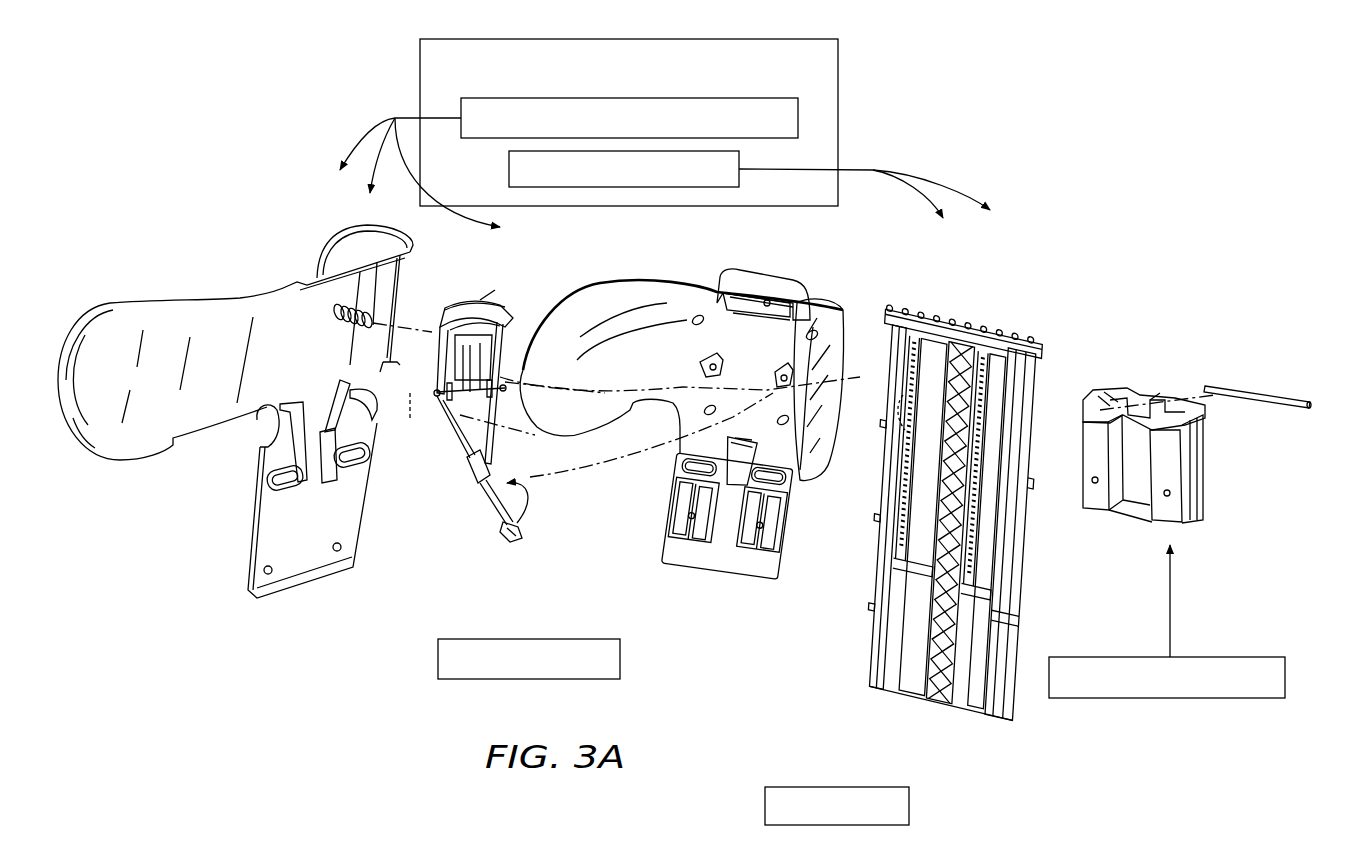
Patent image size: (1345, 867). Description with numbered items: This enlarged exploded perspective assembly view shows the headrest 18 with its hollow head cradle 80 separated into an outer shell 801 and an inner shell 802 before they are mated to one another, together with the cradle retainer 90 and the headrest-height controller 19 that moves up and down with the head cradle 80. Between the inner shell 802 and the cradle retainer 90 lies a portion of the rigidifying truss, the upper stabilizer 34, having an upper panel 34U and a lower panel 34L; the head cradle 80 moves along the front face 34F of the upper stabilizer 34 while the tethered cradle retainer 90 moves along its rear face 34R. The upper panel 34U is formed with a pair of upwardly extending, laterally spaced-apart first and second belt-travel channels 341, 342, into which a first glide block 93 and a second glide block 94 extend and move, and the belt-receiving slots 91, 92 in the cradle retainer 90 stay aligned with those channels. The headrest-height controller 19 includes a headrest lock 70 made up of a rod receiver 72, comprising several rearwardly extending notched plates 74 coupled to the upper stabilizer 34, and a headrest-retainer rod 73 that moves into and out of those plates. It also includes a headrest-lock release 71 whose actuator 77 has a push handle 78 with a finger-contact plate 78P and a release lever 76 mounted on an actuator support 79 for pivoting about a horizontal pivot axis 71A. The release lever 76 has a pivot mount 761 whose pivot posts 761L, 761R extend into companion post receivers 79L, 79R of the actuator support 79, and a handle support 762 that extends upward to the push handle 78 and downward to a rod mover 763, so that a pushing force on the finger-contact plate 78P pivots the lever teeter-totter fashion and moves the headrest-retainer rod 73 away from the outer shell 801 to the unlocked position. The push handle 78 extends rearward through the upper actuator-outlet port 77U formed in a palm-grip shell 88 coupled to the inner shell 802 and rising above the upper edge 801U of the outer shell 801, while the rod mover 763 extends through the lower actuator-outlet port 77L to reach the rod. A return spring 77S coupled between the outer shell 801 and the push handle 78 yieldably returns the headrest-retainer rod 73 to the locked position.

The headrest 18 is at (909, 805).
The headrest-height controller 19 is at (420, 70).
The upper stabilizer 34 is at (957, 479).
The upper panel 34U is at (964, 331).
The lower panel 34L is at (885, 507).
The rear face 34R is at (1013, 535).
The front face 34F is at (950, 523).
The first belt-travel channel 341 is at (975, 468).
The second belt-travel channel 342 is at (908, 448).
The headrest lock 70 is at (713, 187).
The headrest-lock release 71 is at (798, 118).
The pivot axis 71A is at (440, 400).
The rod receiver 72 is at (927, 387).
The headrest-retainer rod 73 is at (1250, 385).
The notched plates 74 is at (997, 377).
The release lever 76 is at (437, 327).
The actuator 77 is at (503, 228).
The return spring 77S is at (345, 296).
The upper actuator-outlet port 77U is at (765, 302).
The lower actuator-outlet port 77L is at (735, 425).
The push handle 78 is at (470, 300).
The finger-contact plate 78P is at (475, 345).
The actuator support 79 is at (770, 363).
The post receiver 79L is at (783, 364).
The post receiver 79R is at (700, 366).
The head cradle 80 is at (843, 787).
The palm-grip shell 88 is at (712, 274).
The cradle retainer 90 is at (1078, 587).
The belt-receiving slot 91 is at (1190, 437).
The belt-receiving slot 92 is at (1108, 416).
The first glide block 93 is at (1152, 518).
The second glide block 94 is at (1087, 470).
The pivot mount 761 is at (466, 497).
The pivot post 761L is at (446, 470).
The pivot post 761R is at (500, 387).
The handle support 762 is at (510, 300).
The rod mover 763 is at (495, 505).
The outer shell 801 is at (513, 639).
The upper edge 801U is at (190, 300).
The inner shell 802 is at (710, 578).